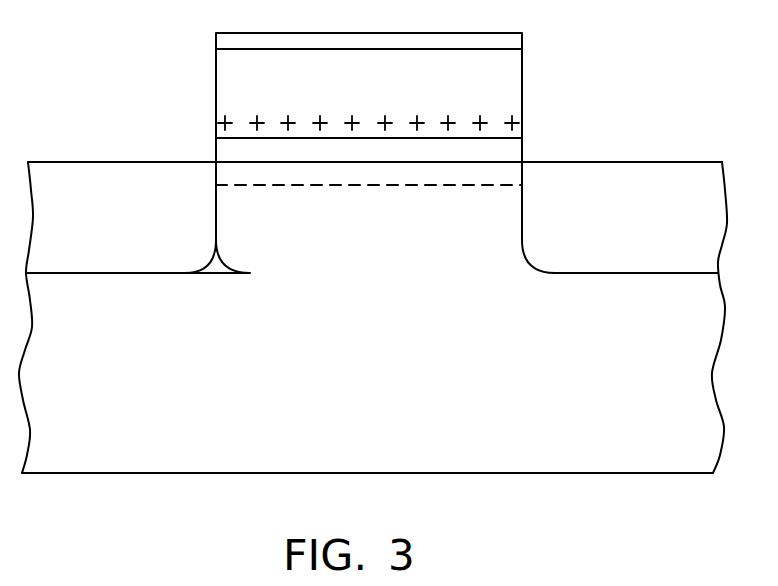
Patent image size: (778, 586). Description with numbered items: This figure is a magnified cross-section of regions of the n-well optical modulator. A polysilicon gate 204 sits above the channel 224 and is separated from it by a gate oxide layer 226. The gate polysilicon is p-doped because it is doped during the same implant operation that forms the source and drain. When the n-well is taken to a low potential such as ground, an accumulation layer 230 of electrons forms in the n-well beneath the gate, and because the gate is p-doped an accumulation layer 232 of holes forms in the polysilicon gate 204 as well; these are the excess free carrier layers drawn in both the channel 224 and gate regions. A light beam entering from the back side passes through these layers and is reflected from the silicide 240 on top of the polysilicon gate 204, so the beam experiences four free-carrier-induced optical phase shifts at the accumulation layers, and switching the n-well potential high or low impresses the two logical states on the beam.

The polysilicon gate 204 is at (232, 76).
The channel 224 is at (418, 197).
The gate oxide layer 226 is at (228, 153).
The accumulation layer 230 is at (294, 187).
The accumulation layer 232 is at (533, 120).
The silicide 240 is at (522, 39).